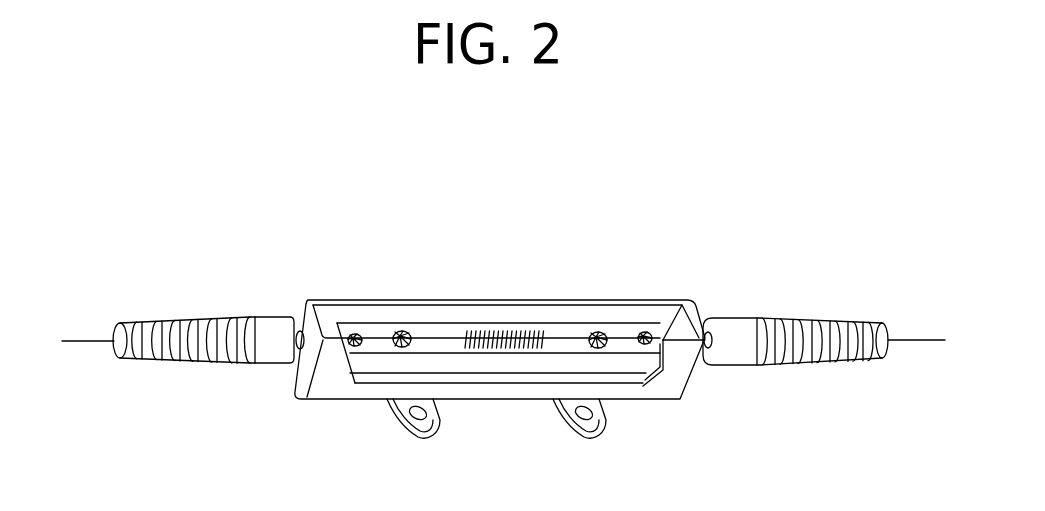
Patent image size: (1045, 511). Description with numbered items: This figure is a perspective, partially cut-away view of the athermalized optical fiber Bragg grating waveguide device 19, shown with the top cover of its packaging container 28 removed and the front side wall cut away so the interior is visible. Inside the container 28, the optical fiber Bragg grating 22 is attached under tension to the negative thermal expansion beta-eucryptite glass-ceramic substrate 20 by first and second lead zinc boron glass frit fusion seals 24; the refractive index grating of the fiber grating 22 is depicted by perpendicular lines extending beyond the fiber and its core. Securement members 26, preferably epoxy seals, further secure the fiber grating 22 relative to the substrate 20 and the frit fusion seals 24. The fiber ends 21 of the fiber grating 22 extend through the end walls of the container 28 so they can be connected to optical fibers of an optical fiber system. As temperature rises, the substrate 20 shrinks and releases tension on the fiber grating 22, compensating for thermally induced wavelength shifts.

The athermalized optical fiber Bragg grating waveguide device 19 is at (445, 218).
The negative thermal expansion beta-eucryptite glass-ceramic substrate 20 is at (622, 370).
The fiber ends 21 is at (84, 338).
The optical fiber Bragg grating 22 is at (547, 333).
The lead zinc boron glass frit fusion seal 24 is at (402, 331).
The securement members 26 is at (350, 332).
The packaging container 28 is at (505, 300).